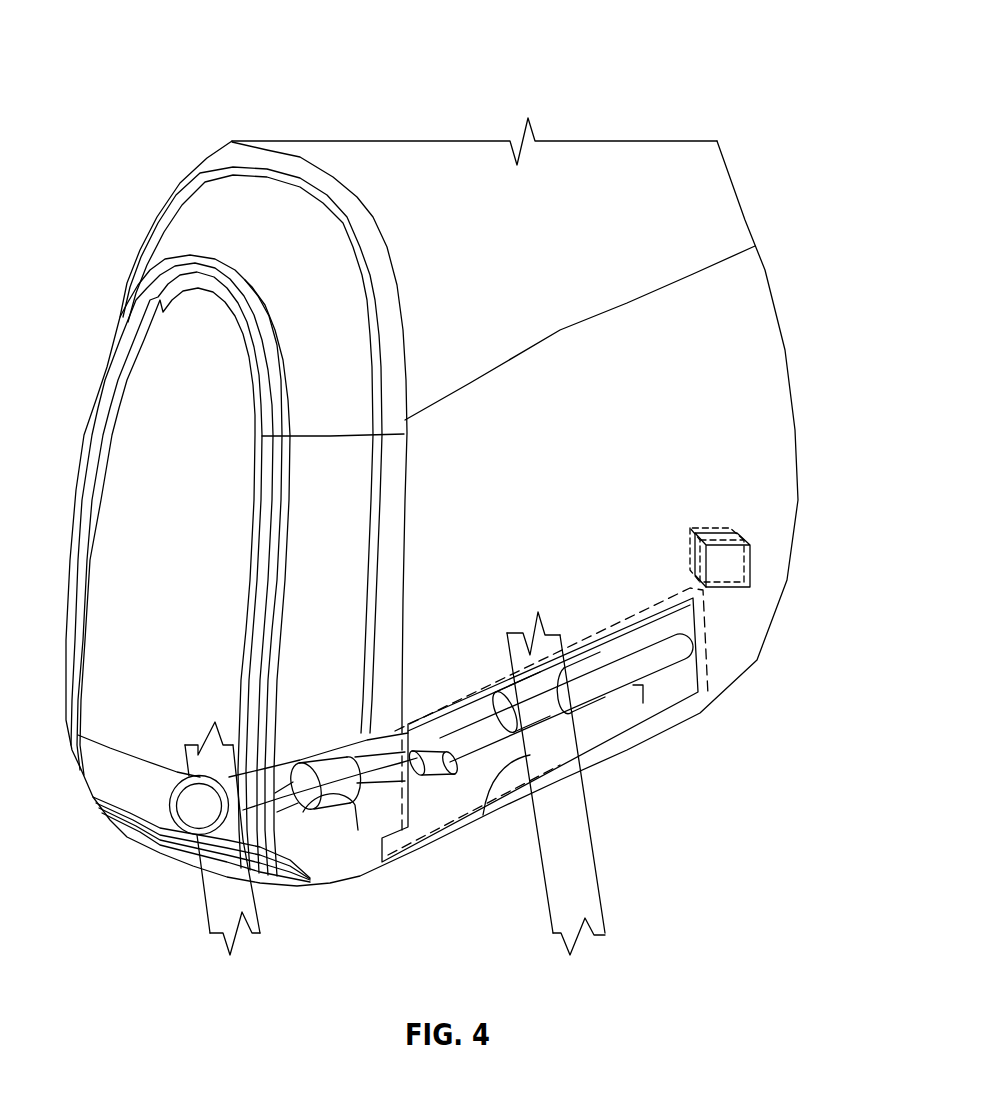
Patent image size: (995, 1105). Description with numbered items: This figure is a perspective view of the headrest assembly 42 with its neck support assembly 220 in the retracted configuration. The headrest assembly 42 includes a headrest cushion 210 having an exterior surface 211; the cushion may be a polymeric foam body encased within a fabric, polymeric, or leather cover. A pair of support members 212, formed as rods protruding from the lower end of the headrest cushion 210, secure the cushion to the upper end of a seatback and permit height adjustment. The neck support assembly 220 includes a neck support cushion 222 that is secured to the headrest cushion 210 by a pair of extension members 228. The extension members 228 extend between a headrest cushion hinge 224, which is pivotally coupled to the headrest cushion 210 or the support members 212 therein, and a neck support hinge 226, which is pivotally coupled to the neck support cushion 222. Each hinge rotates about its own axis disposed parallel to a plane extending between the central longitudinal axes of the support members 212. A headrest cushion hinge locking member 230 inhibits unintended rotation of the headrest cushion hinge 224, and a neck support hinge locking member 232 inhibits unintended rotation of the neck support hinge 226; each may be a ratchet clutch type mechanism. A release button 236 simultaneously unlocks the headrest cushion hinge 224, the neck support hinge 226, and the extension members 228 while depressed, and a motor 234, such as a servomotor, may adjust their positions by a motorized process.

The headrest assembly 42 is at (203, 47).
The headrest cushion 210 is at (757, 225).
The exterior surface 211 is at (748, 293).
The support members 212 is at (597, 866).
The neck support assembly 220 is at (705, 650).
The neck support cushion 222 is at (697, 633).
The headrest cushion hinge 224 is at (512, 793).
The neck support hinge 226 is at (575, 735).
The extension members 228 is at (585, 692).
The headrest cushion hinge locking member 230 is at (312, 812).
The neck support hinge locking member 232 is at (560, 745).
The motor 234 is at (720, 533).
The release button 236 is at (133, 828).